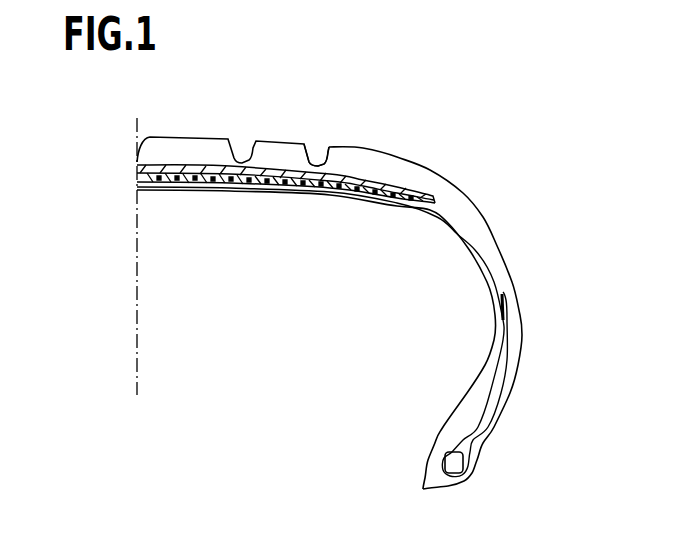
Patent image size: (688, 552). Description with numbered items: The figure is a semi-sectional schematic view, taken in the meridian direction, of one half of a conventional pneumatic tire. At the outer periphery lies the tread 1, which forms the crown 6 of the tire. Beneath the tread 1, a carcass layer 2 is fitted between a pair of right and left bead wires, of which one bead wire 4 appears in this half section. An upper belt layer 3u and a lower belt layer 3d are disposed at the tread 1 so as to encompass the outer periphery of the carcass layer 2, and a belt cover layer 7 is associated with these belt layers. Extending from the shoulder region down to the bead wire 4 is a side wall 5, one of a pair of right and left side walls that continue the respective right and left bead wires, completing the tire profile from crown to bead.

The tread 1 is at (190, 147).
The carcass layer 2 is at (468, 240).
The upper belt layer 3u is at (207, 182).
The lower belt layer 3d is at (250, 178).
The bead wire 4 is at (463, 463).
The side wall 5 is at (517, 328).
The crown 6 is at (283, 137).
The belt cover layer 7 is at (286, 172).